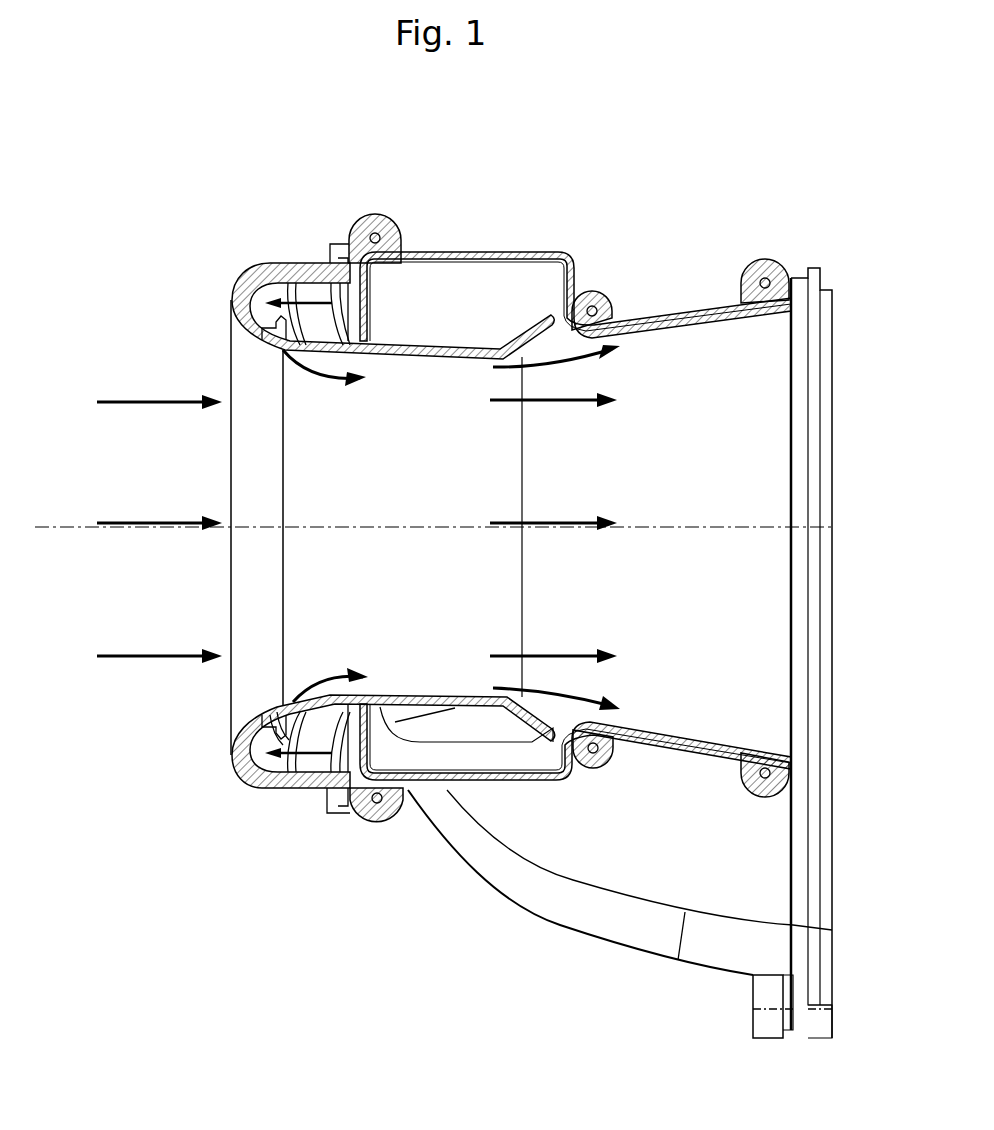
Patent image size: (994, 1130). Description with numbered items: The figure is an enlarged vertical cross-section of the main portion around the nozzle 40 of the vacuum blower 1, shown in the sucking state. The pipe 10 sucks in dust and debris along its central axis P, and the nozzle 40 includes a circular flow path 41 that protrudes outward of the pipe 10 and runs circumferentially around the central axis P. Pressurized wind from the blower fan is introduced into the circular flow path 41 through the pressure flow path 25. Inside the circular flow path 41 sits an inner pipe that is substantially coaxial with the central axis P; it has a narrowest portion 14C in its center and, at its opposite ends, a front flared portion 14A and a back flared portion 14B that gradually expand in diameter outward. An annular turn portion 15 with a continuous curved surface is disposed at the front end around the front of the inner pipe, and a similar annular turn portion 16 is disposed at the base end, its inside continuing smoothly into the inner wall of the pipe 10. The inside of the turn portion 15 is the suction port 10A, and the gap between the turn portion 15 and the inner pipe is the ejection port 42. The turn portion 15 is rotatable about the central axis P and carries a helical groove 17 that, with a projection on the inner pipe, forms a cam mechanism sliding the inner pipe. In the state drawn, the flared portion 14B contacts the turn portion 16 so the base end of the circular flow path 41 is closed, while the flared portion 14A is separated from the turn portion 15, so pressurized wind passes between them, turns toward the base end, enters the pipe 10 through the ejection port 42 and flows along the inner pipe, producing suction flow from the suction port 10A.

The vacuum blower 1 is at (680, 214).
The pipe 10 is at (690, 305).
The suction port 10A is at (262, 357).
The flared portion 14A is at (300, 336).
The flared portion 14B is at (522, 330).
The narrowest portion 14C is at (412, 360).
The turn portion 15 is at (247, 290).
The turn portion 16 is at (545, 343).
The helical groove 17 is at (298, 772).
The pressure flow path 25 is at (648, 862).
The nozzle 40 is at (427, 240).
The circular flow path 41 is at (466, 272).
The ejection port 42 is at (286, 360).
The central axis P is at (70, 526).